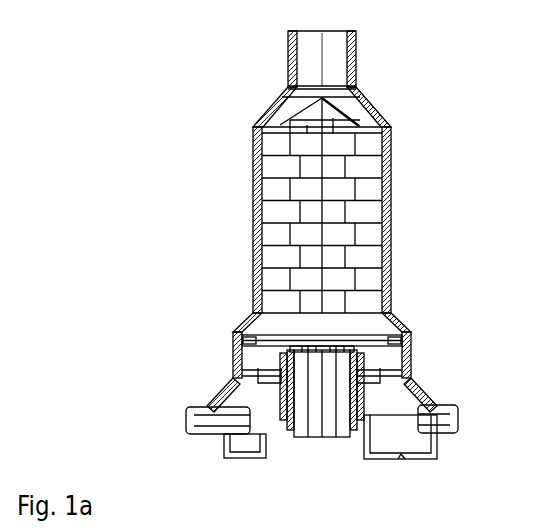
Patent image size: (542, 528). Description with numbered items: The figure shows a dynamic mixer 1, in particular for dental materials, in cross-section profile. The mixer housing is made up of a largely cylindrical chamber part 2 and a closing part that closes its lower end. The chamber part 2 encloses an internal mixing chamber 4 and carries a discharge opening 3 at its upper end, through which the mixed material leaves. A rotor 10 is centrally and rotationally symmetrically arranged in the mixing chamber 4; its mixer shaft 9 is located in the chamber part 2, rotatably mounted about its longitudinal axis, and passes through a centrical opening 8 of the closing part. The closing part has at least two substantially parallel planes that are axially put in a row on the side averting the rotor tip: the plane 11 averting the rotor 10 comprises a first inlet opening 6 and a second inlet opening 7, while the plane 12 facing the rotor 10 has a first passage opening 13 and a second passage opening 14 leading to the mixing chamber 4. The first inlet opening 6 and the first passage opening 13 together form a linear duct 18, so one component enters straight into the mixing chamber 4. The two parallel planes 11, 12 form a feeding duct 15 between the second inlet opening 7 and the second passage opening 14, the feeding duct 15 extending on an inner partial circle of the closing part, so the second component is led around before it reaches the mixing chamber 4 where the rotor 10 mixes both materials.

The dynamic mixer 1 is at (72, 62).
The chamber part 2 is at (392, 122).
The discharge opening 3 is at (338, 33).
The mixing chamber 4 is at (350, 113).
The first inlet opening 6 is at (240, 452).
The second inlet opening 7 is at (420, 438).
The centrical opening 8 is at (320, 438).
The mixer shaft 9 is at (323, 438).
The rotor 10 is at (325, 240).
The plane averting the rotor 11 is at (273, 432).
The plane facing the rotor 12 is at (340, 338).
The first passage opening 13 is at (222, 383).
The second passage opening 14 is at (432, 395).
The feeding duct 15 is at (432, 420).
The linear duct 18 is at (192, 424).